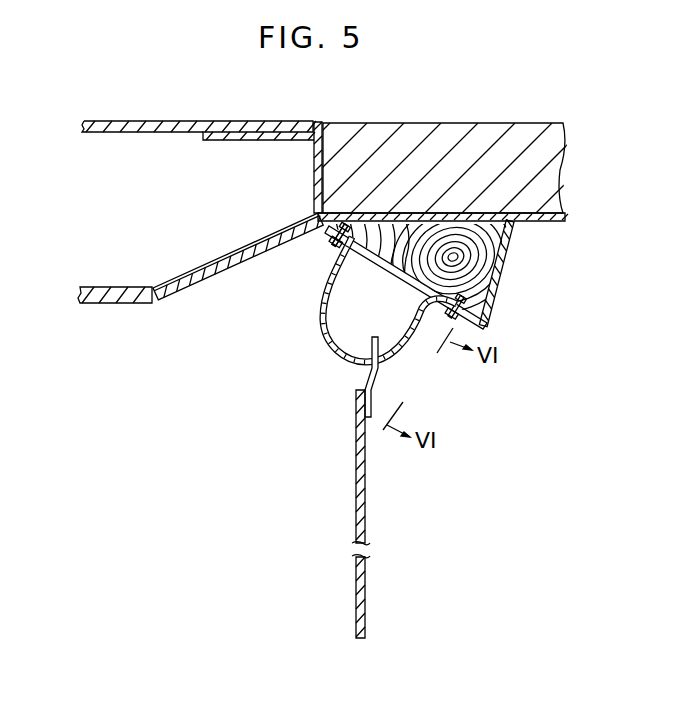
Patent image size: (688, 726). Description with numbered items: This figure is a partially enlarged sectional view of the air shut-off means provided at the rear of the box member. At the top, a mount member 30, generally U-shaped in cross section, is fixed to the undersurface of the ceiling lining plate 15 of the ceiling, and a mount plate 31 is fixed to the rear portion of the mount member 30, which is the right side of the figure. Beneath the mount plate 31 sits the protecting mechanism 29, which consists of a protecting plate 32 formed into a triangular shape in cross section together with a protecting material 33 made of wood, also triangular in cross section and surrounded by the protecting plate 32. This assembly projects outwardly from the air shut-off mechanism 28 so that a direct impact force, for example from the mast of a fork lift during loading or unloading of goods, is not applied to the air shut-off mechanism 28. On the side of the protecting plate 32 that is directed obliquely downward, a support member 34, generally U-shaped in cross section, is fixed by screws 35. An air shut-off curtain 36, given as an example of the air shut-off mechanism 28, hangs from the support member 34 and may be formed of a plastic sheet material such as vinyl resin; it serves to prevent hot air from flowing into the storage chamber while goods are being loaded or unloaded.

The ceiling lining plate 15 is at (174, 121).
The air shut-off mechanism 28 is at (366, 486).
The protecting mechanism 29 is at (502, 297).
The mount member 30 is at (208, 262).
The mount plate 31 is at (444, 123).
The protecting plate 32 is at (494, 315).
The protecting material 33 is at (511, 238).
The support member 34 is at (326, 331).
The screws 35 is at (343, 234).
The air shut-off curtain 36 is at (366, 600).